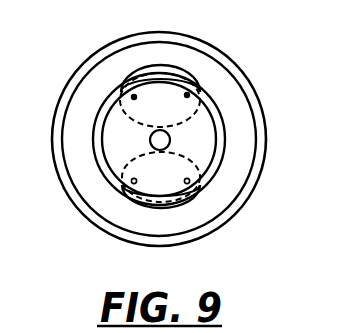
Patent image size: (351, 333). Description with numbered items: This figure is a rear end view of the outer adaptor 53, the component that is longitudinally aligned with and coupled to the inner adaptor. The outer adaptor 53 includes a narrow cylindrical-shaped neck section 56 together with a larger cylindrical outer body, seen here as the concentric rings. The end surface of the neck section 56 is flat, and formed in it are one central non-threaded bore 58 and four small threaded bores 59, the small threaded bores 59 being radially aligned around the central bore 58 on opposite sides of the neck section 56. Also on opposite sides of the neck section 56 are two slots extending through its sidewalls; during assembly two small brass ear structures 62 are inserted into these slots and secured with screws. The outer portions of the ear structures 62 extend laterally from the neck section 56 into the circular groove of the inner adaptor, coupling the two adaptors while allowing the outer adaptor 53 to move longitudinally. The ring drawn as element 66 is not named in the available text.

The outer adaptor 53 is at (95, 38).
The neck section 56 is at (204, 108).
The central non-threaded bore 58 is at (160, 140).
The small threaded bores 59 is at (186, 94).
The ear structures 62 is at (176, 70).
The annular wall 66 is at (225, 143).